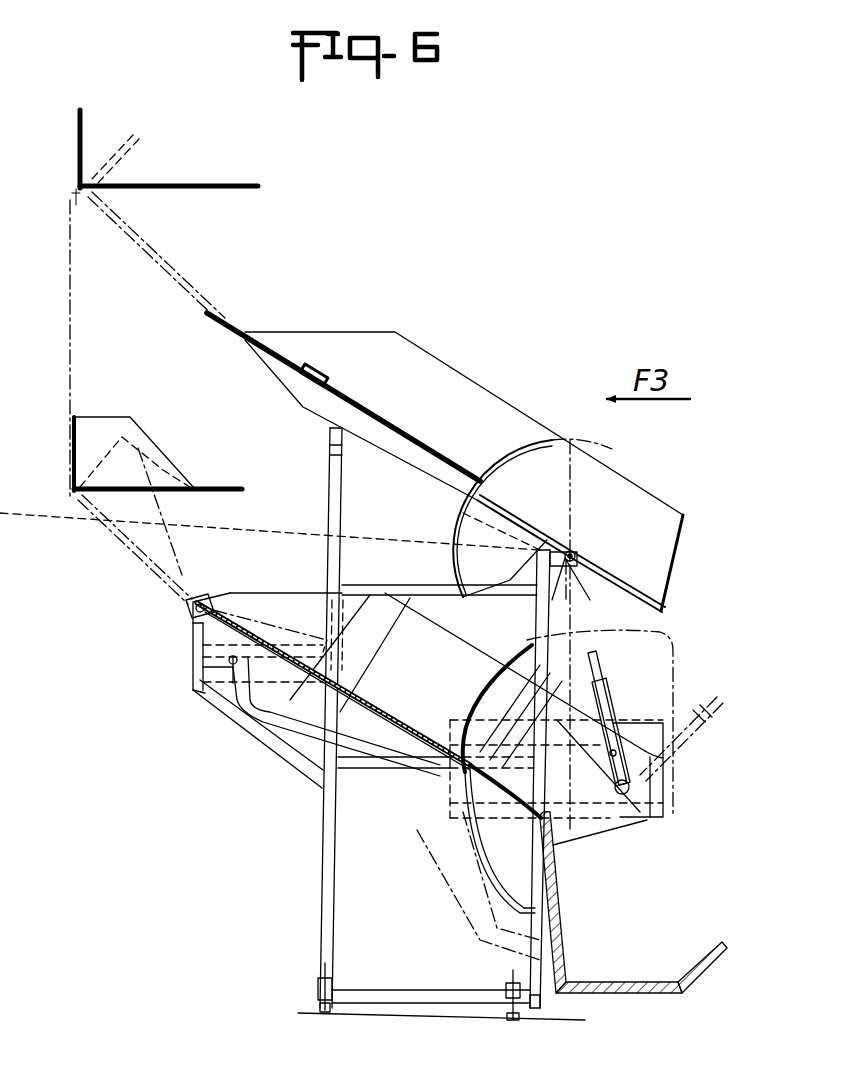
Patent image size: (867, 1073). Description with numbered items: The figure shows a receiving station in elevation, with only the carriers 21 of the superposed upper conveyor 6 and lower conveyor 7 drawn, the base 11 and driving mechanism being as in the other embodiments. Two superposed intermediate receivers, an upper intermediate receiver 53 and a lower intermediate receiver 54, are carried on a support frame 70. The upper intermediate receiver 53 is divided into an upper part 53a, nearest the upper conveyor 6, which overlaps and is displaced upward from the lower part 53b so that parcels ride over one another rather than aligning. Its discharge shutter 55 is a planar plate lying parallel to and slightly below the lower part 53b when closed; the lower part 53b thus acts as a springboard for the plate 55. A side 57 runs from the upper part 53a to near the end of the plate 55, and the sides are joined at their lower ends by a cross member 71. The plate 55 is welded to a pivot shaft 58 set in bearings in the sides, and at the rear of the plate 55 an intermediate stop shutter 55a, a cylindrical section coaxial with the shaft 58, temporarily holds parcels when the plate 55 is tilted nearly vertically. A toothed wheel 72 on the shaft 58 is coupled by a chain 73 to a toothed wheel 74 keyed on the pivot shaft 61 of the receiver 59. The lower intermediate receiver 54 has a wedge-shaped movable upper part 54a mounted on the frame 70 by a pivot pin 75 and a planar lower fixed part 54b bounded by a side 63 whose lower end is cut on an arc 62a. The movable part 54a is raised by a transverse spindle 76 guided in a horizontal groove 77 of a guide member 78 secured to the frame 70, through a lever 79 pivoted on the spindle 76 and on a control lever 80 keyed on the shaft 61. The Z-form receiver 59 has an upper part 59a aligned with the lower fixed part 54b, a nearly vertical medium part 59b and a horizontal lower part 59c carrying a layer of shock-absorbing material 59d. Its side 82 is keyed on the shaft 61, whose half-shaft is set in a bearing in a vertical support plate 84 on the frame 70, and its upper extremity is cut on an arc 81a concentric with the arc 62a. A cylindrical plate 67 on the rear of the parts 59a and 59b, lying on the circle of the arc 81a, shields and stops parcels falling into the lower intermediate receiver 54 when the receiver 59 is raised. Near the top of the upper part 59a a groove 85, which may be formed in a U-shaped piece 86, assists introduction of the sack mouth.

The upper conveyor 6 is at (150, 111).
The lower conveyor 7 is at (131, 417).
The base 11 is at (70, 306).
The carrier 21 is at (196, 184).
The upper intermediate receiver 53 is at (449, 355).
The upper part of upper intermediate receiver 53a is at (209, 322).
The lower part of upper intermediate receiver 53b is at (408, 448).
The lower intermediate receiver 54 is at (297, 582).
The movable upper part 54a is at (240, 625).
The lower fixed part 54b is at (368, 707).
The discharge shutter 55 is at (666, 586).
The intermediate stop shutter 55a is at (458, 543).
The side 57 is at (377, 342).
The pivot shaft 58 is at (579, 558).
The receiver 59 is at (596, 909).
The upper part of receiver 59a is at (520, 810).
The medium part of receiver 59b is at (560, 915).
The lower part of receiver 59c is at (628, 996).
The layer of shock absorbing material 59d is at (660, 985).
The pivot shaft 61 is at (620, 791).
The arc of a circle 62a is at (474, 728).
The side 63 is at (417, 642).
The cylindrical plate 67 is at (488, 876).
The support frame 70 is at (322, 882).
The cross member 71 is at (680, 601).
The toothed wheel 72 is at (574, 553).
The chain 73 is at (600, 655).
The toothed wheel 74 is at (653, 818).
The pivot pin 75 is at (194, 609).
The transverse spindle 76 is at (237, 663).
The horizontal groove 77 is at (223, 644).
The guide member 78 is at (270, 704).
The lever 79 is at (297, 723).
The control lever 80 is at (613, 715).
The arc of a circle 81a is at (515, 693).
The side 82 is at (637, 757).
The vertical support plate 84 is at (666, 799).
The groove 85 is at (470, 770).
The U-shaped piece 86 is at (535, 666).